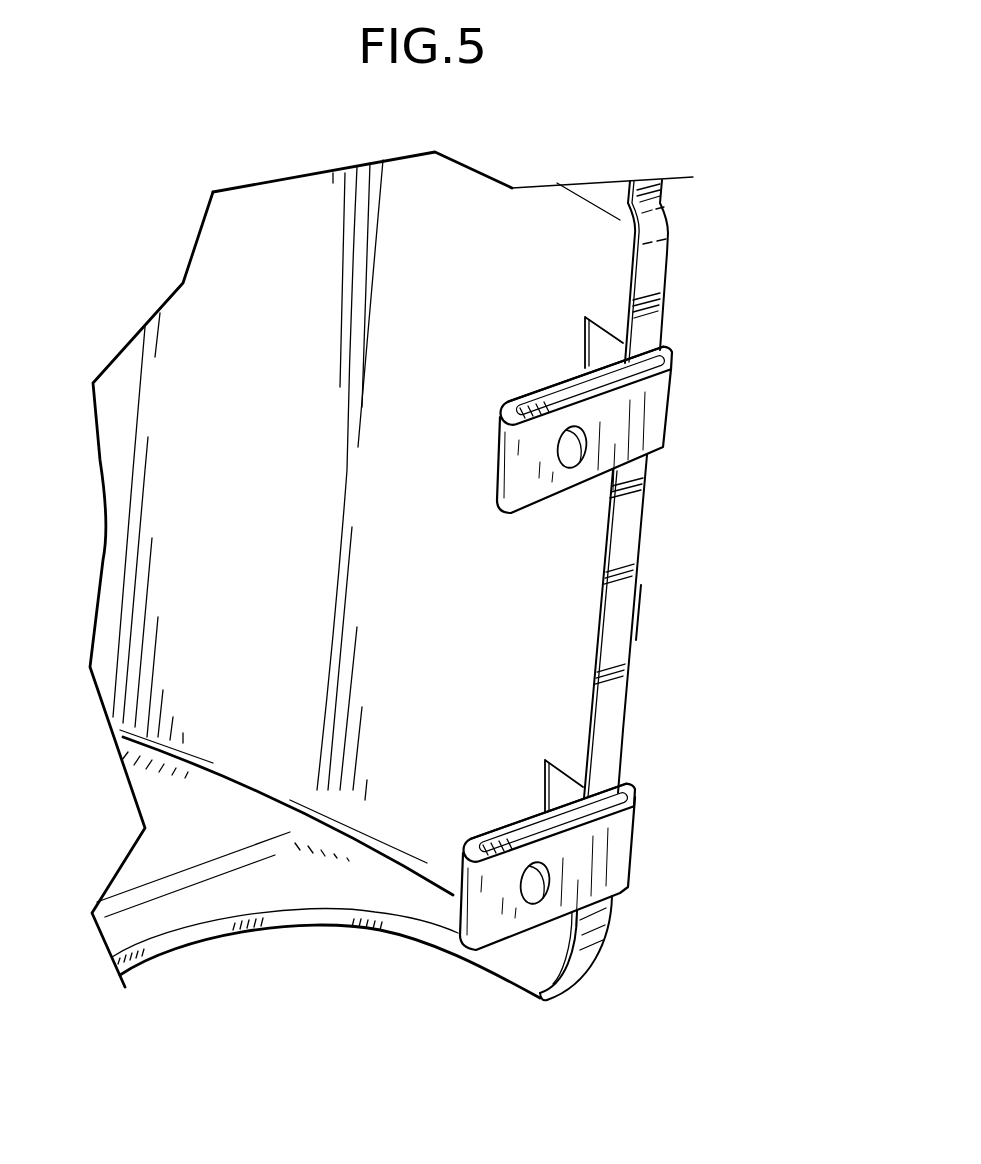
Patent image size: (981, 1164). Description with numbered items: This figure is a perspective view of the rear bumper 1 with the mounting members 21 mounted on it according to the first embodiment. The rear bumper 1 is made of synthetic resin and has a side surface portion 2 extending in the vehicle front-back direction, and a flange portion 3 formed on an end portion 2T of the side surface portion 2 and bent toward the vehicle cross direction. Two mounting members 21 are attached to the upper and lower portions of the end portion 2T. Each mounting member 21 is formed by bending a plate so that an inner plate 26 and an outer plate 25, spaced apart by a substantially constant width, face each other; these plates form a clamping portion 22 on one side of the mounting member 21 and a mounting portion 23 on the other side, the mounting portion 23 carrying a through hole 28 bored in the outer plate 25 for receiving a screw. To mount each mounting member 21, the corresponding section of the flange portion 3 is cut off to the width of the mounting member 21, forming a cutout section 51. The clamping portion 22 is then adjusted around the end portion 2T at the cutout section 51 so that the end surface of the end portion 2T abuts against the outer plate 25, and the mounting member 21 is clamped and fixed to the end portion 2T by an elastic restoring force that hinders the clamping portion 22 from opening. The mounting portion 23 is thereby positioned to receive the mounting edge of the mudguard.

The rear bumper 1 is at (697, 250).
The side surface portion 2 is at (407, 632).
The end portion 2T is at (637, 627).
The flange portion 3 is at (627, 683).
The mounting member 21 is at (583, 628).
The clamping portion 22 is at (610, 327).
The mounting portion 23 is at (651, 681).
The outer plate 25 is at (570, 483).
The inner plate 26 is at (530, 393).
The through hole 28 is at (587, 447).
The cutout section 51 is at (662, 347).